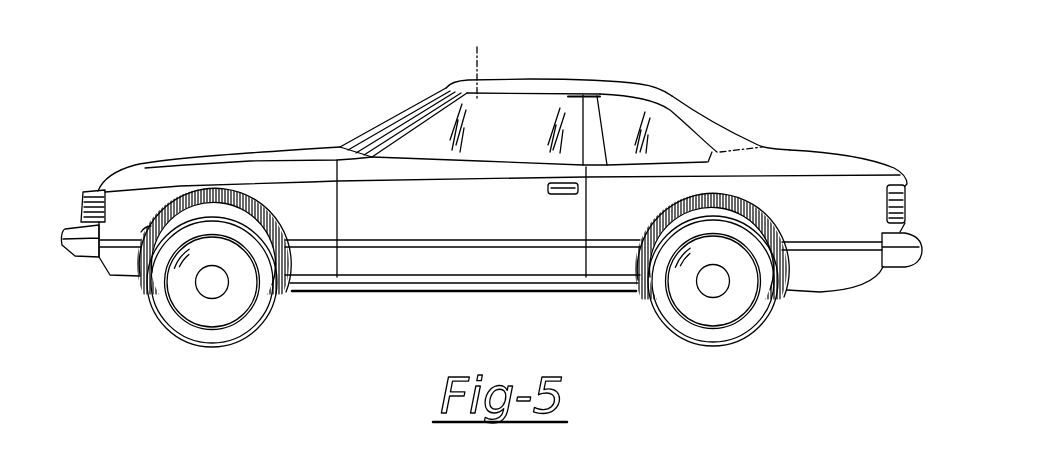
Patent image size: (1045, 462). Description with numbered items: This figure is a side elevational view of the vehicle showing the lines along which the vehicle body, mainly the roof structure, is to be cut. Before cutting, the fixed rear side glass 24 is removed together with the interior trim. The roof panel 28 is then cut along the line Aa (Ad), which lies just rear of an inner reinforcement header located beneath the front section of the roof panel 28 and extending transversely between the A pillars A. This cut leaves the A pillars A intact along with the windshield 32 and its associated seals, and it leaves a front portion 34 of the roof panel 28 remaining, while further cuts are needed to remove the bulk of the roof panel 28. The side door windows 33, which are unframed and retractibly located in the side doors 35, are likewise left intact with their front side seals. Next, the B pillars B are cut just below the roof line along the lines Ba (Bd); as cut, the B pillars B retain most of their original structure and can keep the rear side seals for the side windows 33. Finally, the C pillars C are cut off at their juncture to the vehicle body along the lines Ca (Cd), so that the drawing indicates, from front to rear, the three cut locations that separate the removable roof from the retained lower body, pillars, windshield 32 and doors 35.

The rear side glass 24 is at (655, 113).
The roof panel 28 is at (523, 82).
The windshield 32 is at (385, 88).
The side door windows 33 is at (493, 143).
The front portion of the roof panel 34 is at (462, 82).
The side doors 35 is at (442, 262).
The A pillars A is at (413, 133).
The line Aa Ad is at (484, 44).
The B pillars B is at (587, 132).
The line Ba Bd is at (596, 82).
The C pillars C is at (717, 123).
The line Ca Cd is at (766, 139).